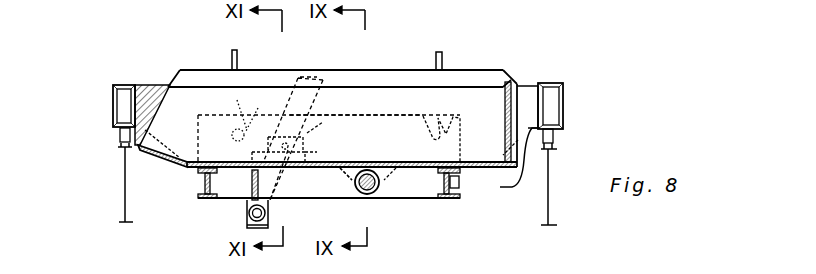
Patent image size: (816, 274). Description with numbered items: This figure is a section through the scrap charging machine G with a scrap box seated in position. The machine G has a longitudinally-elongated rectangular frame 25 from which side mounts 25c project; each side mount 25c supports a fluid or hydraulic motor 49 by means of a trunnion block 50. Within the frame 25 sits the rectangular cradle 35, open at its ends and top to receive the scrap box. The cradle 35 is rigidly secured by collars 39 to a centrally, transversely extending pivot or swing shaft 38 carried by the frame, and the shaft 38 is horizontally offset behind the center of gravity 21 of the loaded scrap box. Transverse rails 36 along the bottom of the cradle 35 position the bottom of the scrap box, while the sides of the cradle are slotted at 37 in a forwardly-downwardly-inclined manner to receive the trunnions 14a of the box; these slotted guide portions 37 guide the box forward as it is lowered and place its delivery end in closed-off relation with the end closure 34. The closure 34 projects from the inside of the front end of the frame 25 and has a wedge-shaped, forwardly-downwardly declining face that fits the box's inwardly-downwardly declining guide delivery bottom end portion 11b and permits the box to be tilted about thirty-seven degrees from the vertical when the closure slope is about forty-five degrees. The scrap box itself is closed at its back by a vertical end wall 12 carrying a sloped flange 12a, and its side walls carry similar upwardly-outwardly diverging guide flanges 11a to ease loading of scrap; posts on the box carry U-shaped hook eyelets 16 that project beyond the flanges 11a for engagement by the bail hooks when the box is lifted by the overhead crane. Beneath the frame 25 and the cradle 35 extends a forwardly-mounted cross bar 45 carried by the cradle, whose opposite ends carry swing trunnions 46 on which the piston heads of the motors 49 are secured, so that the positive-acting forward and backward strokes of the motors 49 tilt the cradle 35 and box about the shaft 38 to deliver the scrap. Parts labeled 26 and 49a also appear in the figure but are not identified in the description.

The end closure 34 is at (155, 84).
The sloped guide flange 11a is at (193, 77).
The hook eyelet 16 is at (238, 56).
The hydraulic motor 49 is at (318, 71).
The sloped flange 12a is at (508, 72).
The end wall 12 is at (505, 105).
The frame 25 is at (112, 97).
The support leg 26 is at (120, 135).
The slotted guide portion 37 is at (229, 115).
The trunnion block 50 is at (260, 110).
The center of gravity 21 is at (347, 115).
The trunnion 14a is at (436, 127).
The gate link 49a is at (307, 133).
The side mount 25c is at (318, 157).
The guide delivery bottom end portion 11b is at (145, 155).
The transverse rail 36 is at (252, 178).
The swing trunnion 46 is at (266, 212).
The cross bar 45 is at (243, 225).
The collar 39 is at (343, 199).
The pivot shaft 38 is at (370, 199).
The cradle 35 is at (410, 199).
The scrap charging machine G is at (509, 166).